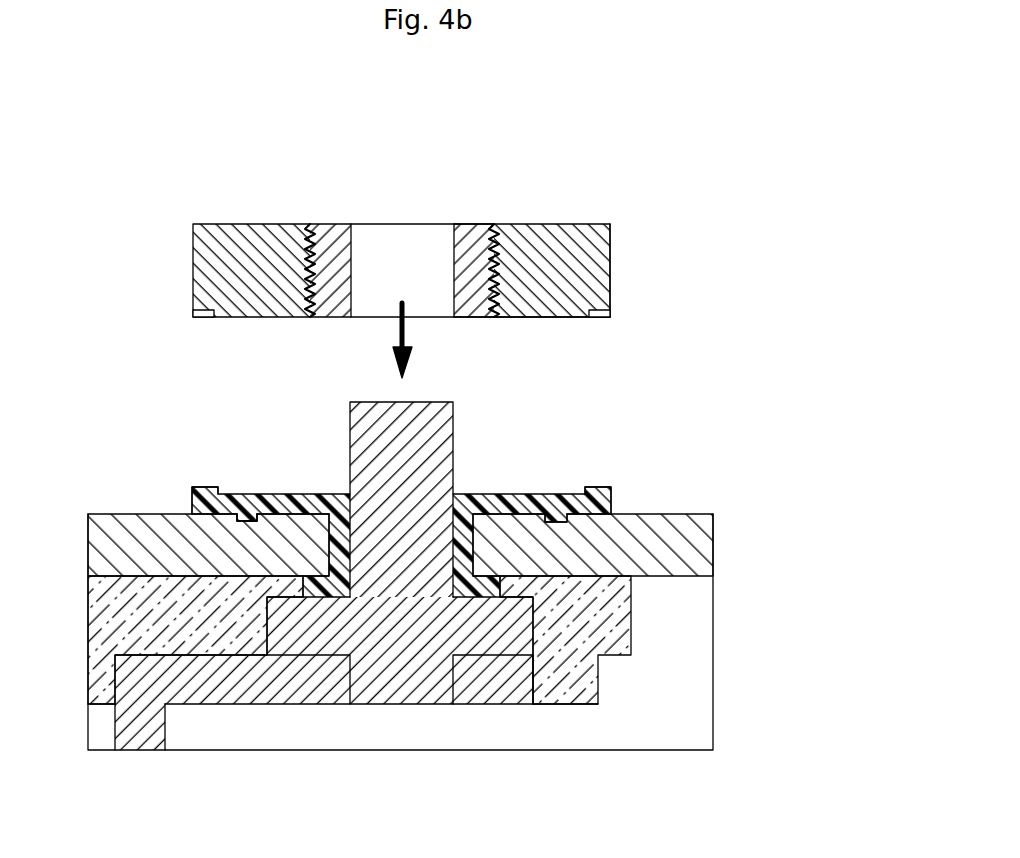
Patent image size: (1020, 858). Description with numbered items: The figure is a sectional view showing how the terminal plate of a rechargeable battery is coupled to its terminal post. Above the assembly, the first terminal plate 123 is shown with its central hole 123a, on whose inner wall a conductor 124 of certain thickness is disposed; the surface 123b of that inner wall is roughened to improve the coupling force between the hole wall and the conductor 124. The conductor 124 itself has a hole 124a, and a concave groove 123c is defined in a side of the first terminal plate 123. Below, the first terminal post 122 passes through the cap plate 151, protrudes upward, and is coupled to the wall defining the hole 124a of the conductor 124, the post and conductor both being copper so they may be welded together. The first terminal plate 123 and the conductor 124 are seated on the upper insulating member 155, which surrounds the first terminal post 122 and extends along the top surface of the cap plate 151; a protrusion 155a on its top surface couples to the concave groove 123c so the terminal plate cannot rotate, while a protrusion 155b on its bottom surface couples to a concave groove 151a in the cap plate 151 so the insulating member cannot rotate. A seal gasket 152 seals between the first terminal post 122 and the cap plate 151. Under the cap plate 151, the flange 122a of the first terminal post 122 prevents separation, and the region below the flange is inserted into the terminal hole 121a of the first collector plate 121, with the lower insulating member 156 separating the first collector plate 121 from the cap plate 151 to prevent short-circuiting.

The first collector plate 121 is at (135, 723).
The terminal hole 121a is at (367, 695).
The first terminal post 122 is at (433, 472).
The flange 122a is at (492, 632).
The first terminal plate 123 is at (250, 246).
The hole 123a is at (473, 258).
The roughened surface 123b is at (513, 278).
The concave groove 123c is at (207, 318).
The conductor 124 is at (332, 240).
The hole 124a is at (454, 265).
The cap plate 151 is at (660, 557).
The concave groove 151a is at (568, 512).
The seal gasket 152 is at (330, 582).
The upper insulating member 155 is at (222, 503).
The protrusion 155a is at (598, 490).
The protrusion 155b is at (243, 517).
The lower insulating member 156 is at (610, 598).